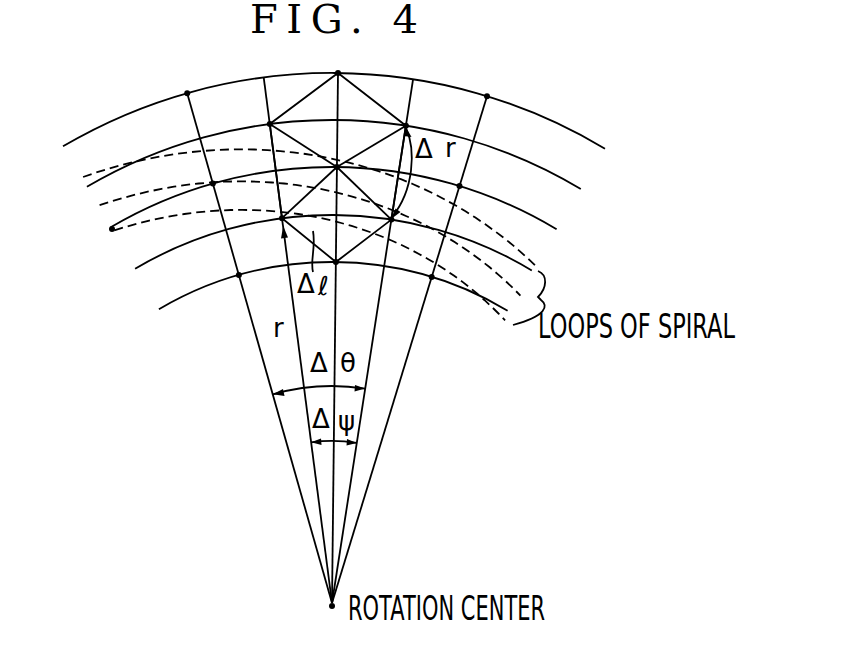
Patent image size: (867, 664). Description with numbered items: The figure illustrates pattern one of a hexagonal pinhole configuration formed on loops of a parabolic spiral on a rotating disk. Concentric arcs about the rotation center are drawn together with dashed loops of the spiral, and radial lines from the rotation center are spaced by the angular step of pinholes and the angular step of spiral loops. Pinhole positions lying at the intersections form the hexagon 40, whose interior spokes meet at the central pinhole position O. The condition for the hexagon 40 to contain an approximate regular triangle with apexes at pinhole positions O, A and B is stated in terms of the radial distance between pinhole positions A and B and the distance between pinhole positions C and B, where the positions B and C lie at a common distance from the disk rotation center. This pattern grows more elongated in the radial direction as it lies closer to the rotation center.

The hexagon 40 is at (395, 101).
The pinhole position O is at (337, 148).
The pinhole position A is at (420, 112).
The pinhole position B is at (401, 236).
The pinhole position C is at (270, 235).